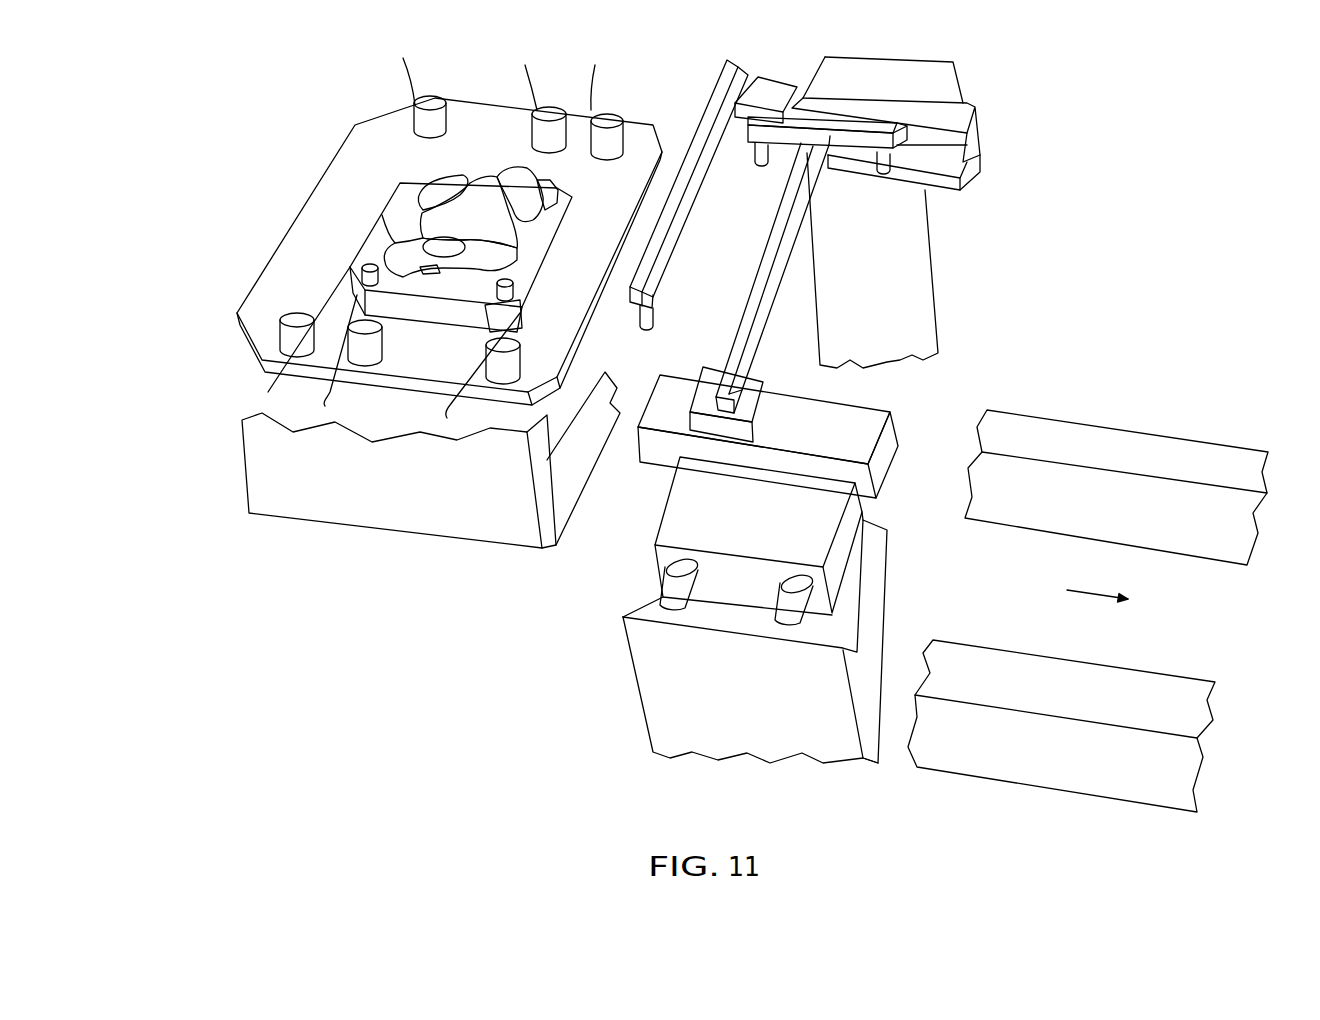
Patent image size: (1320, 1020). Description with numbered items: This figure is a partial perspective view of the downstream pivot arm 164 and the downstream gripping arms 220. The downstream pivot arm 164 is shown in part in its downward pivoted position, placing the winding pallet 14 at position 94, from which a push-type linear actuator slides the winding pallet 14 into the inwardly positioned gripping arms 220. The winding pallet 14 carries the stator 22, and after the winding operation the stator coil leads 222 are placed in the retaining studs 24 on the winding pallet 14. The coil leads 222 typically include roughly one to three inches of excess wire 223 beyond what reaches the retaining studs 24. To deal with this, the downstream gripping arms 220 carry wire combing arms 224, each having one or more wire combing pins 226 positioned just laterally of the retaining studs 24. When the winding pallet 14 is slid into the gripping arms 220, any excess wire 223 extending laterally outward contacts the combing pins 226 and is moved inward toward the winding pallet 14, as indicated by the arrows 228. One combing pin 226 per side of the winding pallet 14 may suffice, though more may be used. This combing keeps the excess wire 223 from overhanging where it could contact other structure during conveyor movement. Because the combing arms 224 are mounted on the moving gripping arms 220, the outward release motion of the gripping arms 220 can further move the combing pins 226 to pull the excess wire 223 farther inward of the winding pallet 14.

The winding pallet 14 is at (356, 122).
The stator 22 is at (268, 225).
The retaining studs 24 is at (432, 96).
The position 94 is at (262, 185).
The downstream pivot arm 164 is at (250, 498).
The downstream gripping arms 220 is at (635, 477).
The stator coil leads 222 is at (328, 302).
The excess wire 223 is at (268, 392).
The combing arms 224 is at (668, 260).
The wire combing pins 226 is at (655, 322).
The arrows 228 is at (385, 100).